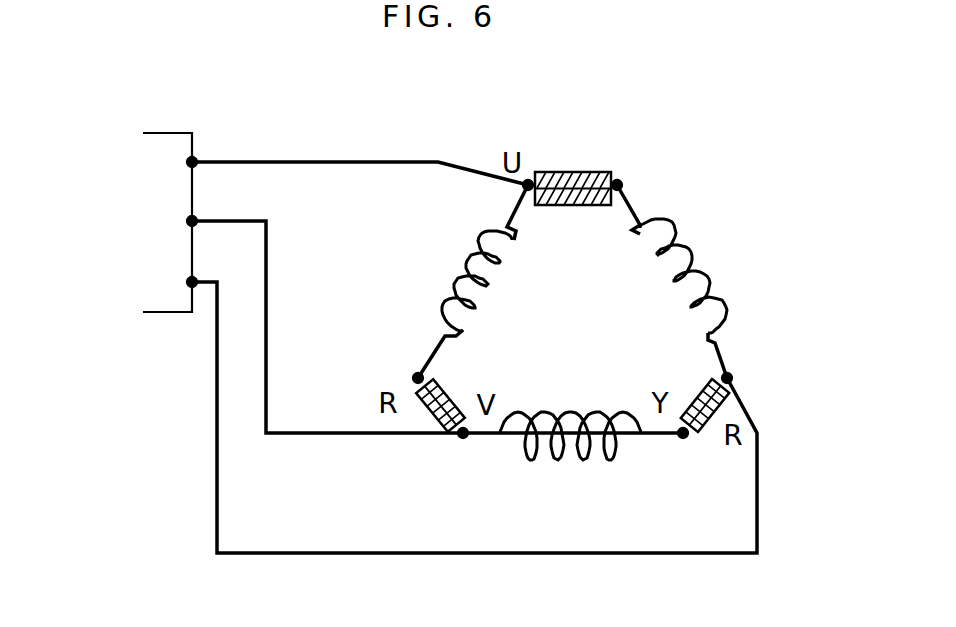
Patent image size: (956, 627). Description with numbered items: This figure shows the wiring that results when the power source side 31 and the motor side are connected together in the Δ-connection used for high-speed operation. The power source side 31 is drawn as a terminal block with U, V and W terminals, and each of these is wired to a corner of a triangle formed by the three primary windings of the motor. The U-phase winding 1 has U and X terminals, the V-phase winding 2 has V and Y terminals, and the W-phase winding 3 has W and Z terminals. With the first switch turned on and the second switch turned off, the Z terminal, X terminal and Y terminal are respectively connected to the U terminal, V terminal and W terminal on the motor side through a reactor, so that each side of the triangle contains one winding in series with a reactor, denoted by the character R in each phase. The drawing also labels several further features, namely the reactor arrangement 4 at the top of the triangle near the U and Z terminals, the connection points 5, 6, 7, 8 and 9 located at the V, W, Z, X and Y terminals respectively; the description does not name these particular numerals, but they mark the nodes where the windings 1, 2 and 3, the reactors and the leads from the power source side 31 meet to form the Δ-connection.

The U-phase winding 1 is at (433, 283).
The V-phase winding 2 is at (579, 465).
The W-phase winding 3 is at (700, 285).
The resistor R between terminals U and Z 4 is at (540, 172).
The terminal V connection point 5 is at (464, 446).
The terminal W connection point 6 is at (729, 364).
The terminal Z connection point 7 is at (617, 170).
The terminal X connection point 8 is at (413, 371).
The terminal Y connection point 9 is at (691, 448).
The power source side 31 is at (162, 313).